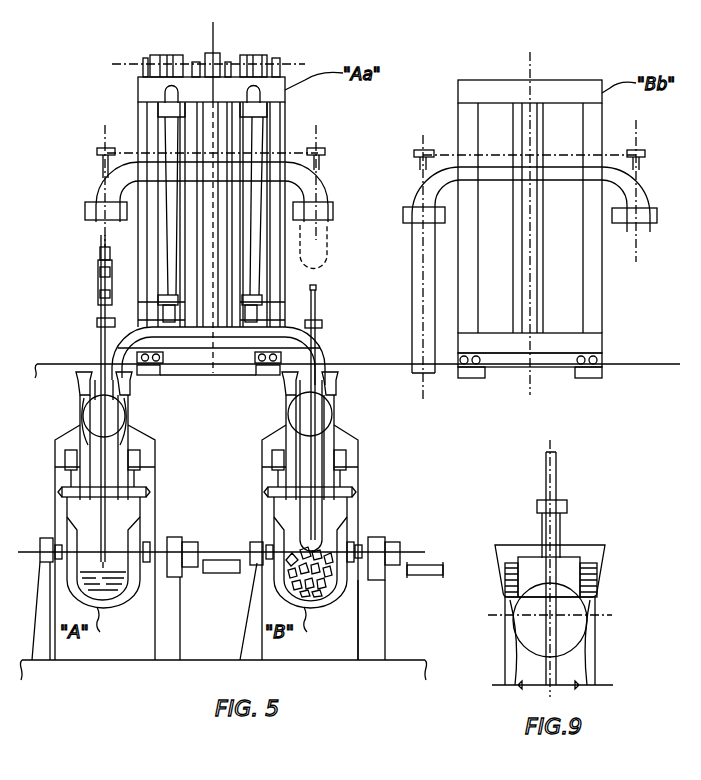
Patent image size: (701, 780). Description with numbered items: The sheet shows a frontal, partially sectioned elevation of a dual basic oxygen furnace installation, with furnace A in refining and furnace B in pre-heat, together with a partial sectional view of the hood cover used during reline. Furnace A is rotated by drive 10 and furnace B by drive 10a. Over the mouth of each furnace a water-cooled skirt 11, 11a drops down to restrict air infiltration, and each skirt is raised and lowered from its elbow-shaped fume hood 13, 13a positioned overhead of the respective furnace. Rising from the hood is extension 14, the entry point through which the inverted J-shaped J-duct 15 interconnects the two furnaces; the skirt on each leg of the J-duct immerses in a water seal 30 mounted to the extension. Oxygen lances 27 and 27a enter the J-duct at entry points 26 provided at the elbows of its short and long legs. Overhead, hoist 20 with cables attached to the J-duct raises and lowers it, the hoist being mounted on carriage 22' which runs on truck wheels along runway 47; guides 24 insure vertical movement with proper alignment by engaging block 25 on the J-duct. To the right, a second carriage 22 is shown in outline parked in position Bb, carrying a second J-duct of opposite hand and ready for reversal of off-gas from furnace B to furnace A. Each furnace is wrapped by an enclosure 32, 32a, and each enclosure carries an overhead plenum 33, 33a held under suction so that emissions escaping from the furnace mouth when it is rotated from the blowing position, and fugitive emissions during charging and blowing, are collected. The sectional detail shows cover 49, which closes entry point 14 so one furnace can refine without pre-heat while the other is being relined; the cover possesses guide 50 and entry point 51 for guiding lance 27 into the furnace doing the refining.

In FIG. 5, the hoist 20 is at (243, 55).
In FIG. 5, the guides 24 is at (227, 143).
In FIG. 5, the block 25 is at (213, 310).
In FIG. 5, the J-duct 15 is at (98, 181).
In FIG. 5, the entry points 26 is at (98, 318).
In FIG. 5, the oxygen lance 27 is at (102, 378).
In FIG. 9, the oxygen lance 27 is at (556, 500).
In FIG. 5, the oxygen lance 27a is at (316, 298).
In FIG. 5, the carriage 22' is at (209, 376).
In FIG. 5, the carriage 22 is at (530, 355).
In FIG. 5, the runway 47 is at (630, 366).
In FIG. 5, the fume hood 13 is at (113, 450).
In FIG. 9, the fume hood 13 is at (580, 667).
In FIG. 5, the fume hood 13a is at (329, 441).
In FIG. 5, the plenum 33 is at (65, 446).
In FIG. 5, the plenum 33a is at (273, 445).
In FIG. 5, the enclosure 32 is at (55, 497).
In FIG. 5, the enclosure 32a is at (262, 500).
In FIG. 5, the skirt 11 is at (130, 502).
In FIG. 5, the skirt 11a is at (334, 498).
In FIG. 5, the drive 10 is at (176, 536).
In FIG. 5, the drive 10a is at (47, 537).
In FIG. 9, the entry point 51 is at (540, 502).
In FIG. 9, the guide 50 is at (540, 530).
In FIG. 9, the cover 49 is at (570, 563).
In FIG. 9, the extension 14 is at (575, 556).
In FIG. 9, the water seal 30 is at (597, 585).